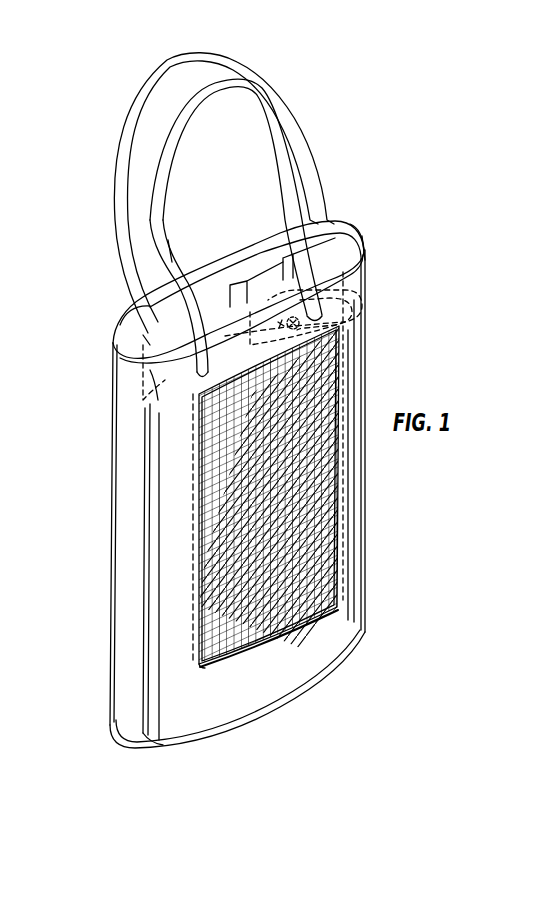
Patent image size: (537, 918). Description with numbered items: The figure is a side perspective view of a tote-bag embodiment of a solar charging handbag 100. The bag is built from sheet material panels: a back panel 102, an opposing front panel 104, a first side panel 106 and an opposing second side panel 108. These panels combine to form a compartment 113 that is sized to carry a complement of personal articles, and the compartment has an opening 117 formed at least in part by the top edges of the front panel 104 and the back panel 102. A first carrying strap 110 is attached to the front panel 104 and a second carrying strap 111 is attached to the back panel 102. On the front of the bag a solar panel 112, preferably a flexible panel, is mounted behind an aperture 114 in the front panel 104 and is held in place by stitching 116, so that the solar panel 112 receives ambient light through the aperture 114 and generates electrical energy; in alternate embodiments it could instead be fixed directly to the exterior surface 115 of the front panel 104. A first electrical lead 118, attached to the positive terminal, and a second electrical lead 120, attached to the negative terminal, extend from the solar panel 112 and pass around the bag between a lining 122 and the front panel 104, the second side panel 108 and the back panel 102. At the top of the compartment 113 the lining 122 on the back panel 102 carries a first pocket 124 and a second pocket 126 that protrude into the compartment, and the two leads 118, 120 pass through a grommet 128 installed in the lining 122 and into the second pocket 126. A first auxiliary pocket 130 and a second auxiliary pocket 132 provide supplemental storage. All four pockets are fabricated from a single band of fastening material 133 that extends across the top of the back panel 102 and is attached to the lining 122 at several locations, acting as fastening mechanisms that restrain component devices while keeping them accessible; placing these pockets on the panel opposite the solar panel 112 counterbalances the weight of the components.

The solar charging handbag 100 is at (100, 508).
The back panel 102 is at (203, 258).
The front panel 104 is at (166, 691).
The first side panel 106 is at (120, 596).
The second side panel 108 is at (362, 232).
The first carrying strap 110 is at (330, 183).
The second carrying strap 111 is at (238, 62).
The solar panel 112 is at (260, 608).
The compartment 113 is at (150, 367).
The aperture 114 is at (258, 648).
The exterior surface 115 is at (378, 561).
The stitching 116 is at (208, 667).
The opening 117 is at (365, 240).
The first electrical lead 118 is at (350, 292).
The second electrical lead 120 is at (345, 333).
The lining 122 is at (250, 228).
The first pocket 124 is at (177, 293).
The second pocket 126 is at (268, 243).
The grommet 128 is at (293, 327).
The first auxiliary pocket 130 is at (163, 346).
The second auxiliary pocket 132 is at (343, 255).
The fastening material 133 is at (181, 228).